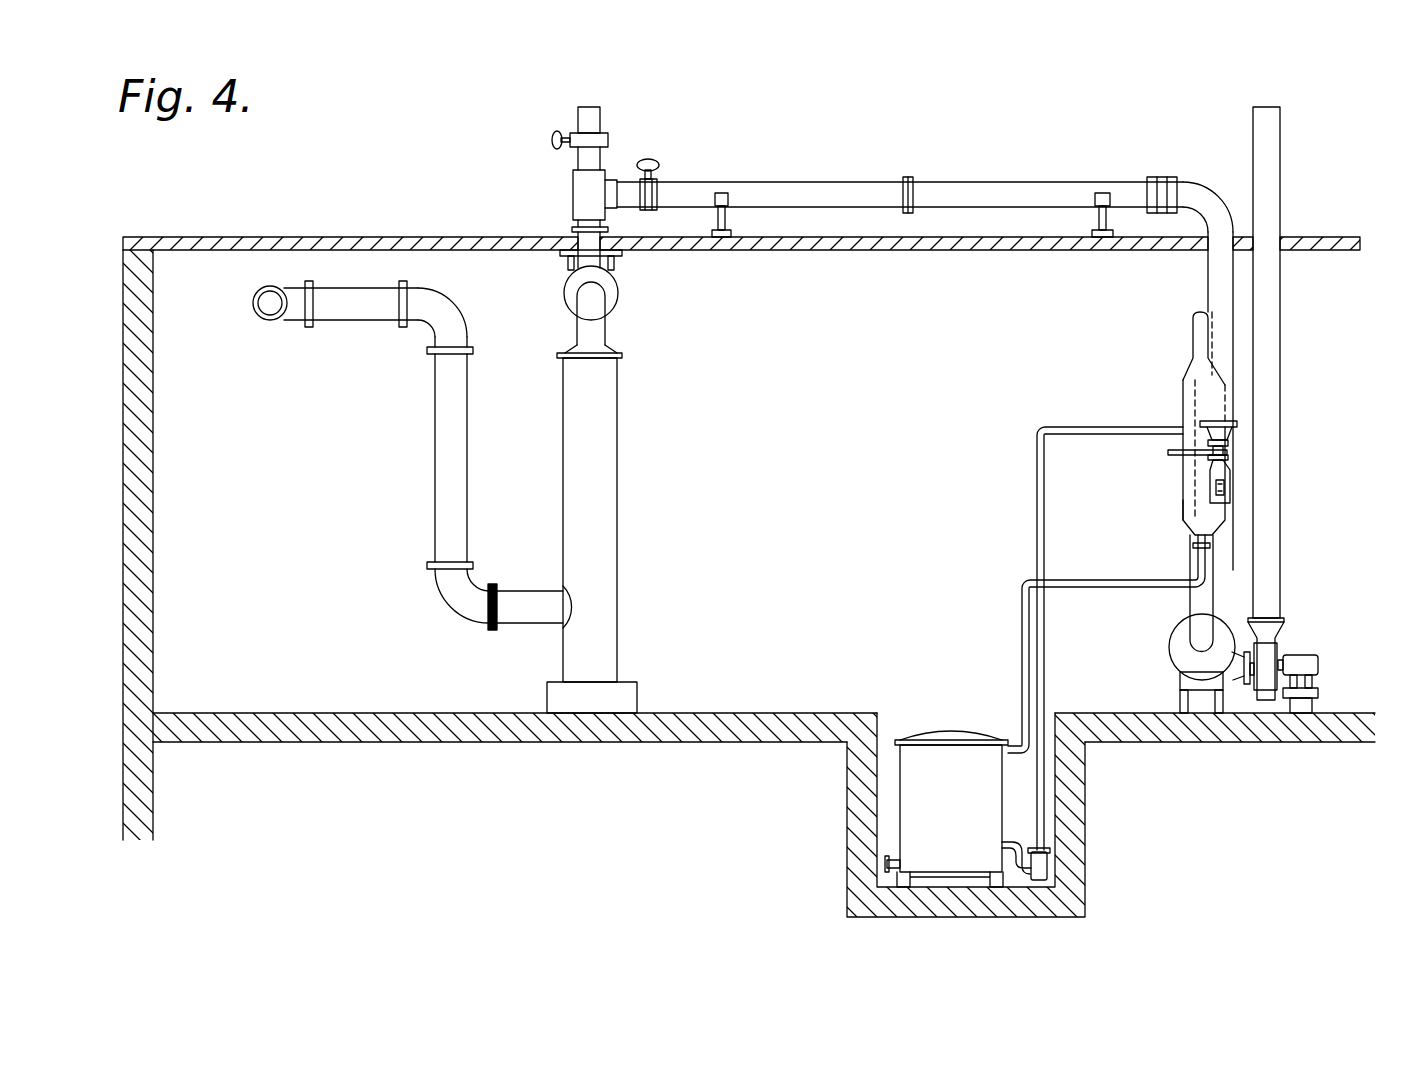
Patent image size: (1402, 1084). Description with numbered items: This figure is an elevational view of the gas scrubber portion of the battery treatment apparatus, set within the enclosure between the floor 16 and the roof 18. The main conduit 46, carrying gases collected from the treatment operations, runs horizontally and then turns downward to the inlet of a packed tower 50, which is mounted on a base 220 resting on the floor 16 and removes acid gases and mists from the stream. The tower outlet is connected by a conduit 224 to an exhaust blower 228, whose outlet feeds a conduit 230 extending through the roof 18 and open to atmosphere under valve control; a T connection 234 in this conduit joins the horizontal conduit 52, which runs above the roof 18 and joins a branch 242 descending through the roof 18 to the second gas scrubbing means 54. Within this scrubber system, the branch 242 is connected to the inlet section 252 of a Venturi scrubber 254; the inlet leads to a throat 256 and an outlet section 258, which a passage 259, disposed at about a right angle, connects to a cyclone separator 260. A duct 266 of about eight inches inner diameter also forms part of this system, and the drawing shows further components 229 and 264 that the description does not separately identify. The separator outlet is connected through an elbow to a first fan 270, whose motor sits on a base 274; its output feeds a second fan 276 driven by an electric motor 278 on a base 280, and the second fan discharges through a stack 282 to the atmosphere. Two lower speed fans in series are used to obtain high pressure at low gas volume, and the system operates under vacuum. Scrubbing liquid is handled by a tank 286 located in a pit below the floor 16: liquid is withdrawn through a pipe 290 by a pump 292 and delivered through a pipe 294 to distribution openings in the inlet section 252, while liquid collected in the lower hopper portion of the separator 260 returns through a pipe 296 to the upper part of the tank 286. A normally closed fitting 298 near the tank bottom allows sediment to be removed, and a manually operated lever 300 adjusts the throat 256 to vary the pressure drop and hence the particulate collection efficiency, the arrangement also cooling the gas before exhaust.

The floor 16 is at (298, 713).
The roof 18 is at (362, 237).
The main conduit 46 is at (348, 320).
The packed tower 50 is at (622, 466).
The conduit 52 is at (808, 182).
The second gas scrubbing means 54 is at (1172, 400).
The base 220 is at (547, 690).
The conduit 224 is at (605, 332).
The exhaust blower 228 is at (618, 294).
The flange 229 is at (565, 258).
The conduit 230 is at (578, 113).
The T connection 234 is at (573, 186).
The branch conduit 242 is at (1208, 272).
The inlet section 252 is at (1237, 426).
The Venturi scrubber 254 is at (1205, 462).
The throat 256 is at (1232, 446).
The outlet section 258 is at (1232, 470).
The passage 259 is at (1224, 490).
The cyclone separator 260 is at (1180, 502).
The chamber cap 264 is at (1193, 316).
The duct 266 is at (1190, 598).
The first fan 270 is at (1170, 636).
The base 274 is at (1180, 680).
The second fan 276 is at (1266, 652).
The electric motor 278 is at (1318, 657).
The base 280 is at (1318, 690).
The stack 282 is at (1280, 182).
The tank 286 is at (951, 809).
The pipe 290 is at (1003, 887).
The pump 292 is at (1048, 866).
The pipe 294 is at (1037, 484).
The pipe 296 is at (1022, 632).
The normally closed fitting 298 is at (887, 858).
The manually-operated lever 300 is at (1168, 452).